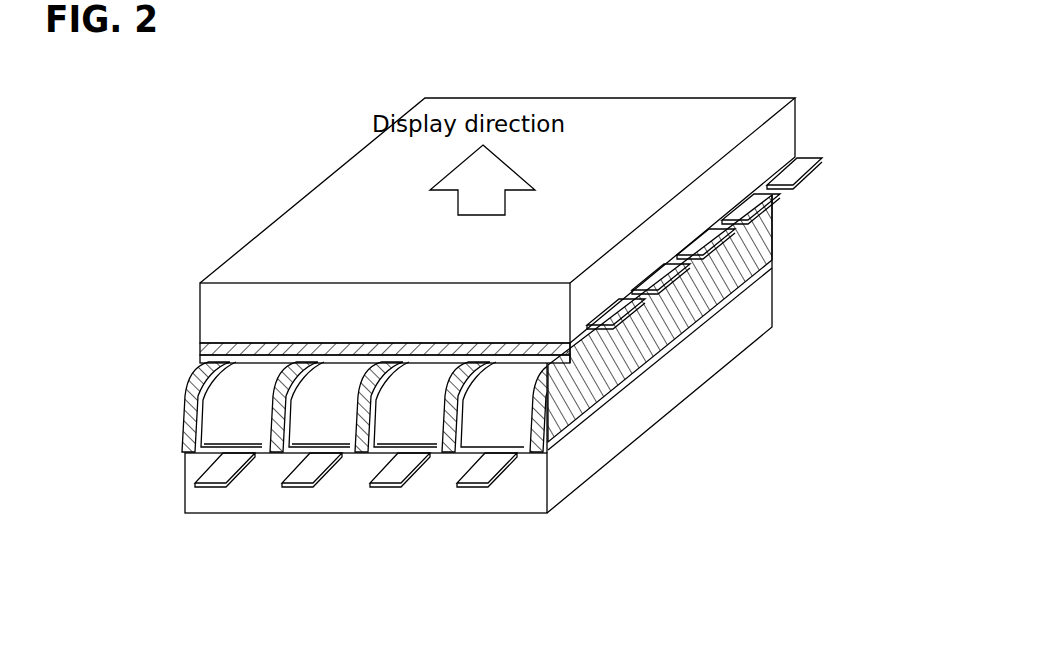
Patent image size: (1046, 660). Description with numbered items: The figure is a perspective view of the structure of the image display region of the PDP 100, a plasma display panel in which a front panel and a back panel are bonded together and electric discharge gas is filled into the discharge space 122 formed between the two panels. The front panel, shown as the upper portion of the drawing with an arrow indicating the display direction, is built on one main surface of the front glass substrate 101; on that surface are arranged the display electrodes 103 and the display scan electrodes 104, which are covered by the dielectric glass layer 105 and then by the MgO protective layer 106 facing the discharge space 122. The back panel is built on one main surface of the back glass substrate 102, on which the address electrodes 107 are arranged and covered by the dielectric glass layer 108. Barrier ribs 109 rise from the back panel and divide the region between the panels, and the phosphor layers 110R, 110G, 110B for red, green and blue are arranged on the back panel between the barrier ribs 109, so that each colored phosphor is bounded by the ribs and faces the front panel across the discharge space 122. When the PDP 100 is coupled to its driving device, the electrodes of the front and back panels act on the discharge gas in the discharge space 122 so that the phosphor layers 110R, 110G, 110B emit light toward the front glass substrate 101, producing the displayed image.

The PDP 100 is at (780, 298).
The front glass substrate 101 is at (207, 300).
The back glass substrate 102 is at (440, 505).
The display electrodes 103 is at (565, 323).
The display scan electrodes 104 is at (773, 227).
The dielectric glass layer 105 is at (200, 348).
The MgO protective layer 106 is at (200, 362).
The address electrodes 107 is at (222, 472).
The dielectric glass layer 108 is at (215, 450).
The barrier ribs 109 is at (527, 366).
The phosphor layer 110R is at (262, 400).
The phosphor layer 110G is at (327, 440).
The phosphor layer 110B is at (410, 443).
The discharge space 122 is at (512, 383).